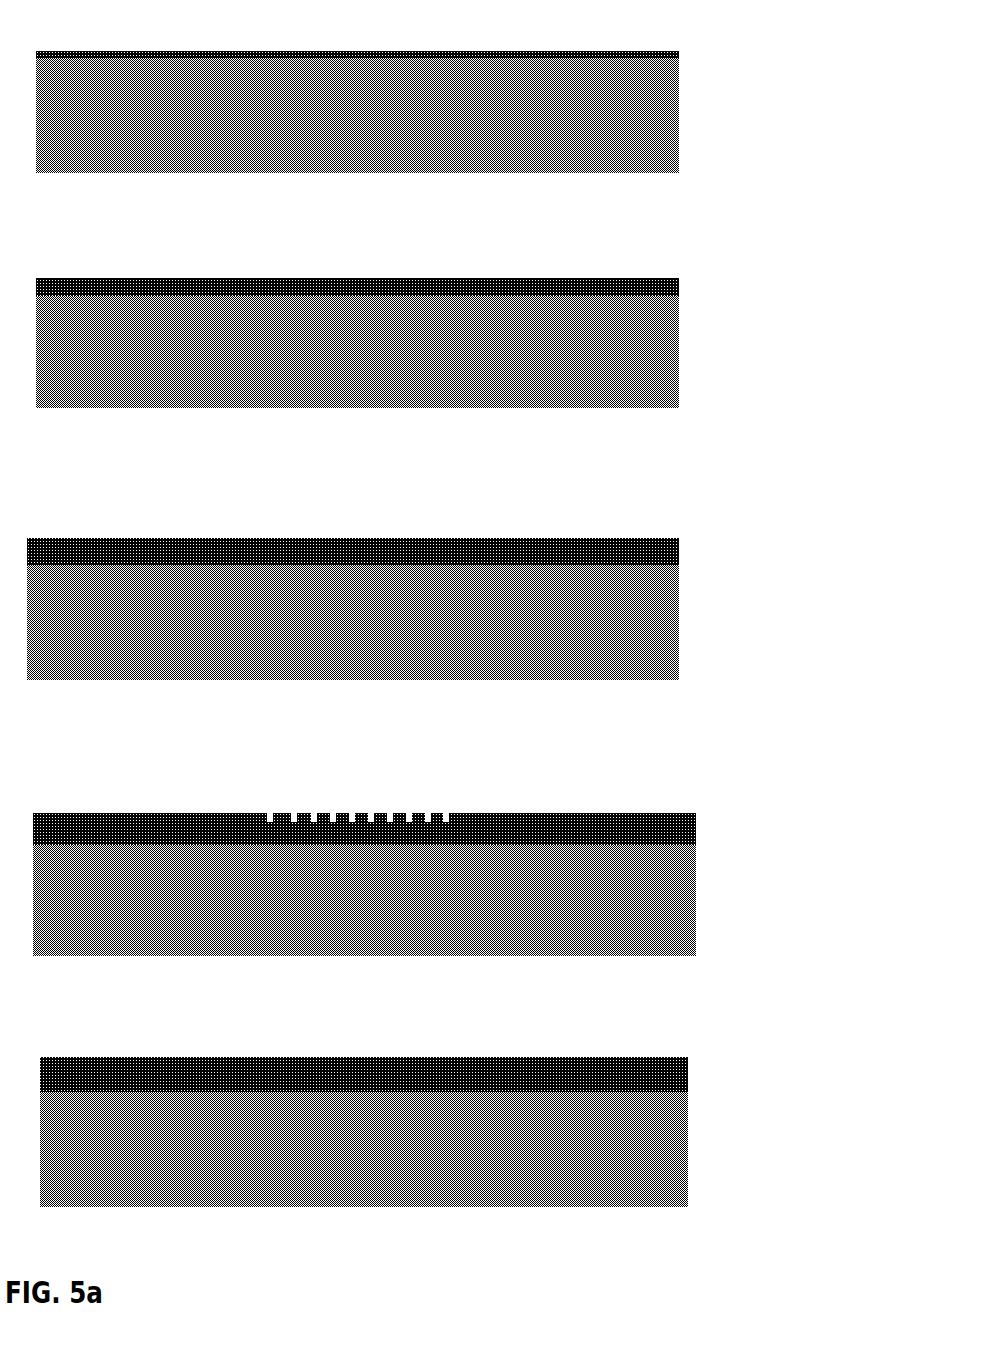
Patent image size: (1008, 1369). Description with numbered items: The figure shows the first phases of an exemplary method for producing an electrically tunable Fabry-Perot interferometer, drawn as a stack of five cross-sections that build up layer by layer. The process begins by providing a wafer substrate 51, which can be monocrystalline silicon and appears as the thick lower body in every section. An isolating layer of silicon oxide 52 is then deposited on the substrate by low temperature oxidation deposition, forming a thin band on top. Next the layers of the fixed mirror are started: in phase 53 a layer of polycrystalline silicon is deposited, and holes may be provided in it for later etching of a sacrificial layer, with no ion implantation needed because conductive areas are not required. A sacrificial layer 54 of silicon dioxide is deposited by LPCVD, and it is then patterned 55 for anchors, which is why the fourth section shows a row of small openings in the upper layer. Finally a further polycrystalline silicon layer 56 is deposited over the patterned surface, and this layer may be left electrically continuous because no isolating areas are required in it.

The wafer substrate 51 is at (670, 118).
The isolating layer of silicon oxide 52 is at (599, 52).
The polycrystalline silicon layer 53 is at (608, 280).
The sacrificial layer 54 is at (448, 540).
The patterning of sacrificial layer 55 is at (268, 812).
The polycrystalline silicon layer 56 is at (527, 1057).